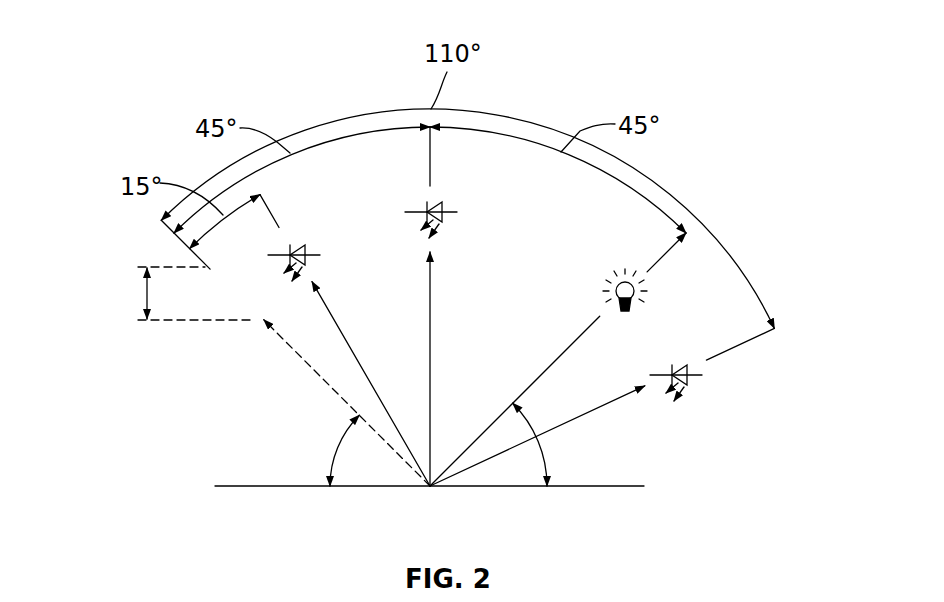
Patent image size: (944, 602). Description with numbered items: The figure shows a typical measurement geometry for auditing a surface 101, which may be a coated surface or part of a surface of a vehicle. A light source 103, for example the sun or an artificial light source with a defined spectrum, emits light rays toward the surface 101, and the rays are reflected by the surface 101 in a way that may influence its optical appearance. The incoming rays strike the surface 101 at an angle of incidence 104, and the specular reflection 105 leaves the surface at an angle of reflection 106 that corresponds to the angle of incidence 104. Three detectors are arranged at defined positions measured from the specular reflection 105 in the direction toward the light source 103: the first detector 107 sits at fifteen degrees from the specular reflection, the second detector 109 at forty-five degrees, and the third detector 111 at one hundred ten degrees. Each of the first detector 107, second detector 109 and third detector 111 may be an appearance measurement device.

The surface 101 is at (632, 486).
The light source 103 is at (628, 312).
The angle of incidence 104 is at (543, 443).
The specular reflection 105 is at (145, 295).
The angle of reflection 106 is at (338, 453).
The first detector 107 is at (313, 254).
The second detector 109 is at (450, 211).
The third detector 111 is at (691, 380).